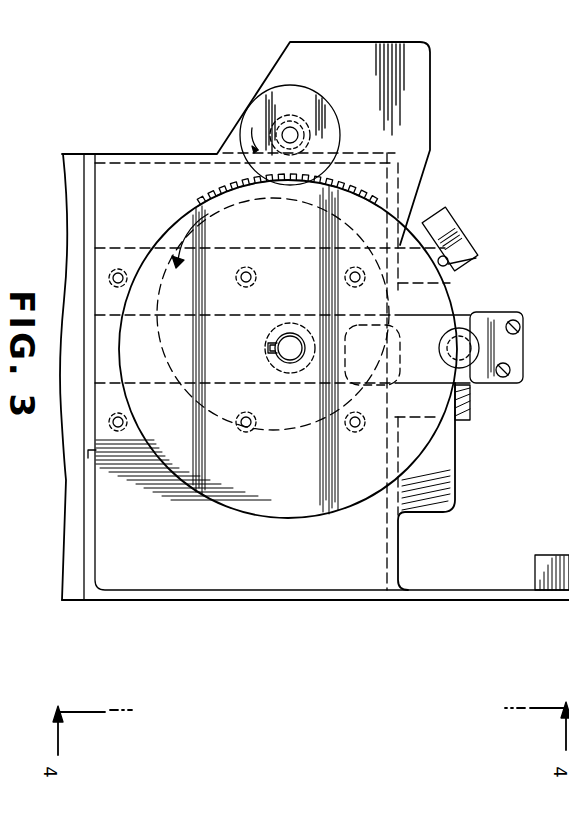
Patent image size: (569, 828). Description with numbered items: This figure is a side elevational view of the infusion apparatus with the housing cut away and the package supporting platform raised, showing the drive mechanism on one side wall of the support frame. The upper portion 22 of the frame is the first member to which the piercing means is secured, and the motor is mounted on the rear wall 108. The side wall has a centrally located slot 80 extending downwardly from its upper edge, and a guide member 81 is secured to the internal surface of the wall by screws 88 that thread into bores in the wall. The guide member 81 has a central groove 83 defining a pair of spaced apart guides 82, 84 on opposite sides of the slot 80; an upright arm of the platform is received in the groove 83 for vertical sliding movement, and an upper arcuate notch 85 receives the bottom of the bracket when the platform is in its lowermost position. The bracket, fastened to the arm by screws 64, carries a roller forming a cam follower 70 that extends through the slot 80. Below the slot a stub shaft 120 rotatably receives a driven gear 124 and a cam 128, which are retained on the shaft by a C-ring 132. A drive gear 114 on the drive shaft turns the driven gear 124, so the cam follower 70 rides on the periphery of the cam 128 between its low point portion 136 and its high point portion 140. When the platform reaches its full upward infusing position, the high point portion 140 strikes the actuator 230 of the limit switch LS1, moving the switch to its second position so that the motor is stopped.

The upper portion 22 is at (455, 510).
The screws 64 is at (525, 340).
The cam follower 70 is at (500, 383).
The slot 80 is at (472, 400).
The guide member 81 is at (114, 304).
The guide 82 is at (100, 247).
The groove 83 is at (134, 386).
The guide 84 is at (88, 458).
The arcuate notch 85 is at (366, 382).
The screws 88 is at (246, 432).
The rear wall 108 is at (166, 153).
The drive gear 114 is at (268, 122).
The stub shaft 120 is at (292, 345).
The driven gear 124 is at (162, 242).
The cam 128 is at (160, 328).
The C-ring 132 is at (268, 345).
The low point portion 136 is at (322, 430).
The high point portion 140 is at (420, 200).
The limit switch LS1 is at (480, 250).
The actuator 230 is at (472, 262).